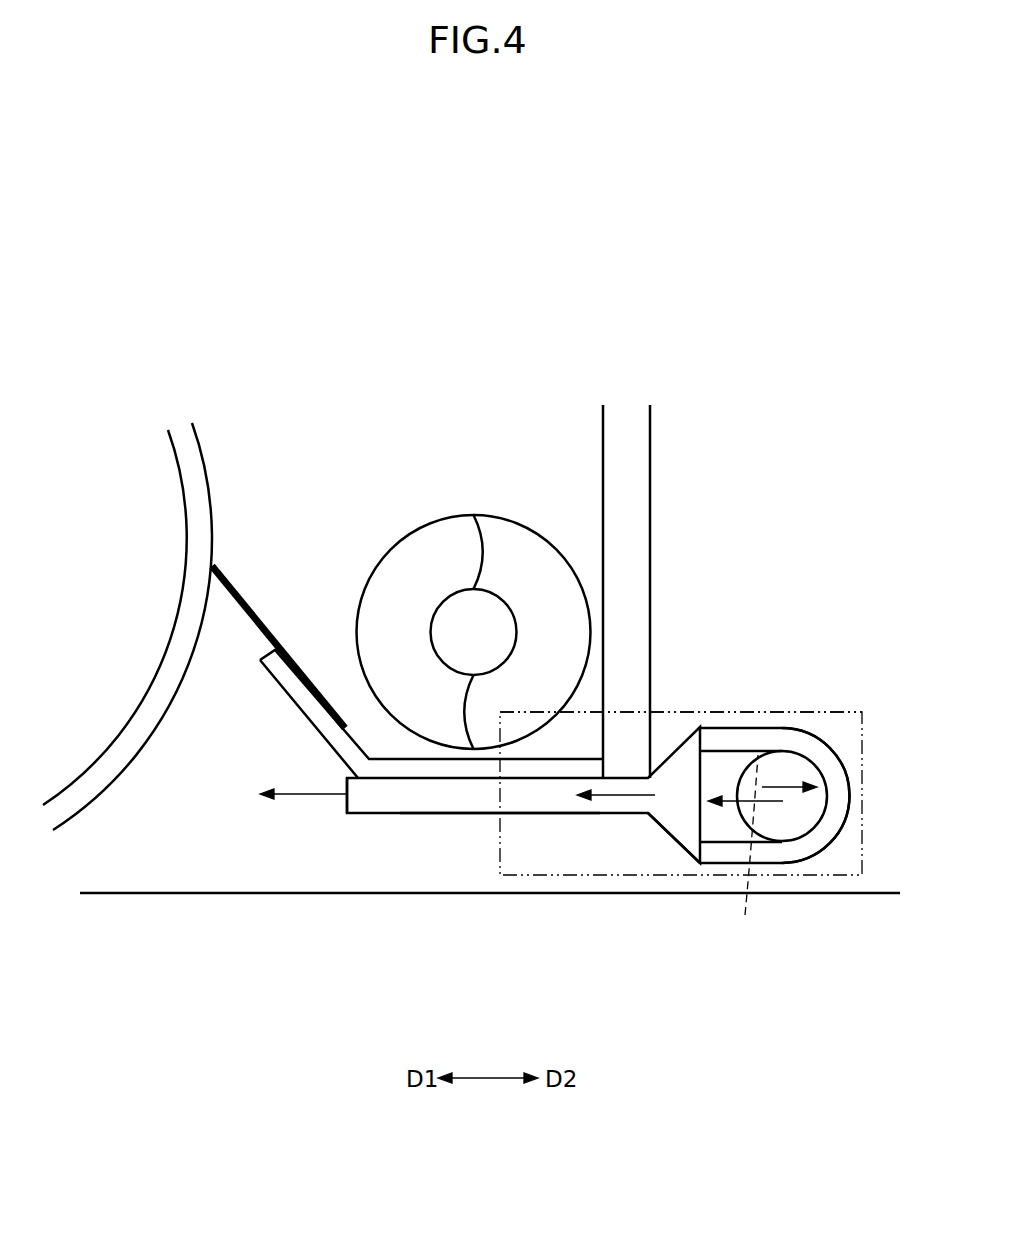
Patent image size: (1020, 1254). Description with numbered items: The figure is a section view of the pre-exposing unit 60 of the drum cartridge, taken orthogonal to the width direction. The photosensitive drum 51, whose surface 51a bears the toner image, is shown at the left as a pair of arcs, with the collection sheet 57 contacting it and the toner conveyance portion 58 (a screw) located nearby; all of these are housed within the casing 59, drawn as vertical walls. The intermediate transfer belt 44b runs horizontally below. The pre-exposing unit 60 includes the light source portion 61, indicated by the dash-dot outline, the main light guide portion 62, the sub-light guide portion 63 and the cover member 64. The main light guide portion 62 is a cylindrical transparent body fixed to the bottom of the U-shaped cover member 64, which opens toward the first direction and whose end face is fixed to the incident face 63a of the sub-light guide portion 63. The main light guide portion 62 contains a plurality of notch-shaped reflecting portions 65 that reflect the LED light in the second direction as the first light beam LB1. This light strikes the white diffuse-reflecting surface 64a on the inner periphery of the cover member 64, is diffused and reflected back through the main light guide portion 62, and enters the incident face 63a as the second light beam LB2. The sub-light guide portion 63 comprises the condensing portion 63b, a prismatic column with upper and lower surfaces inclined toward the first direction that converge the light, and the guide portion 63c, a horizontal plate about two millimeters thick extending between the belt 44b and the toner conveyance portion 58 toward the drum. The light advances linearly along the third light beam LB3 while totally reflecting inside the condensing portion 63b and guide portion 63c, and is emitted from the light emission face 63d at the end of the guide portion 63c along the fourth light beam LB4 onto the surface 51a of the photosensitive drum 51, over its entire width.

The photosensitive drum 51 is at (222, 448).
The surface of the photosensitive drum 51a is at (207, 517).
The collection sheet 57 is at (235, 610).
The toner conveyance portion 58 is at (508, 528).
The casing 59 is at (645, 498).
The pre-exposing unit 60 is at (741, 995).
The light source portion 61 is at (568, 875).
The main light guide portion 62 is at (795, 832).
The sub-light guide portion 63 is at (406, 832).
The incident face 63a is at (703, 772).
The condensing portion 63b is at (680, 837).
The guide portion 63c is at (448, 815).
The light emission face 63d is at (345, 803).
The cover member 64 is at (818, 740).
The diffuse-reflecting surface 64a is at (803, 810).
The reflecting portion 65 is at (743, 852).
The intermediate transfer belt 44b is at (233, 893).
The first light beam LB1 is at (777, 783).
The second light beam LB2 is at (733, 802).
The third light beam LB3 is at (638, 797).
The fourth light beam LB4 is at (315, 793).